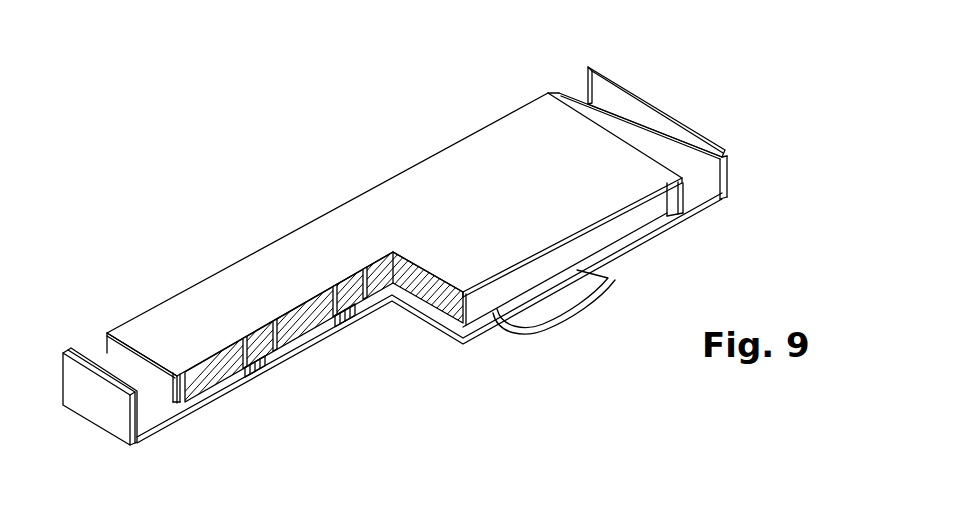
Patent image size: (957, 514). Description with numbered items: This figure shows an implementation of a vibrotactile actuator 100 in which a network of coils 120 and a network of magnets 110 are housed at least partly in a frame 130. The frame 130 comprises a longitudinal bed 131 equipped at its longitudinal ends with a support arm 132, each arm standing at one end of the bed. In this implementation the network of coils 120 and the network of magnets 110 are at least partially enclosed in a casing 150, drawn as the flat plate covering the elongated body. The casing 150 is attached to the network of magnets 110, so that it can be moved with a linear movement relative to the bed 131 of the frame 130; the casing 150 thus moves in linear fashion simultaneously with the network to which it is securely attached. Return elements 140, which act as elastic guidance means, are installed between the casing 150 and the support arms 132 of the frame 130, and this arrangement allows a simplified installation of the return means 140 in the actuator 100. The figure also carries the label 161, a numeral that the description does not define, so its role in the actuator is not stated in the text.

The vibrotactile actuator 100 is at (468, 264).
The network of magnets 110 is at (221, 369).
The network of coils 120 is at (354, 319).
The frame 130 is at (468, 290).
The longitudinal bed 131 is at (712, 210).
The support arm 132 is at (104, 406).
The return elements 140 is at (598, 96).
The casing 150 is at (463, 187).
The connection element 161 is at (498, 513).